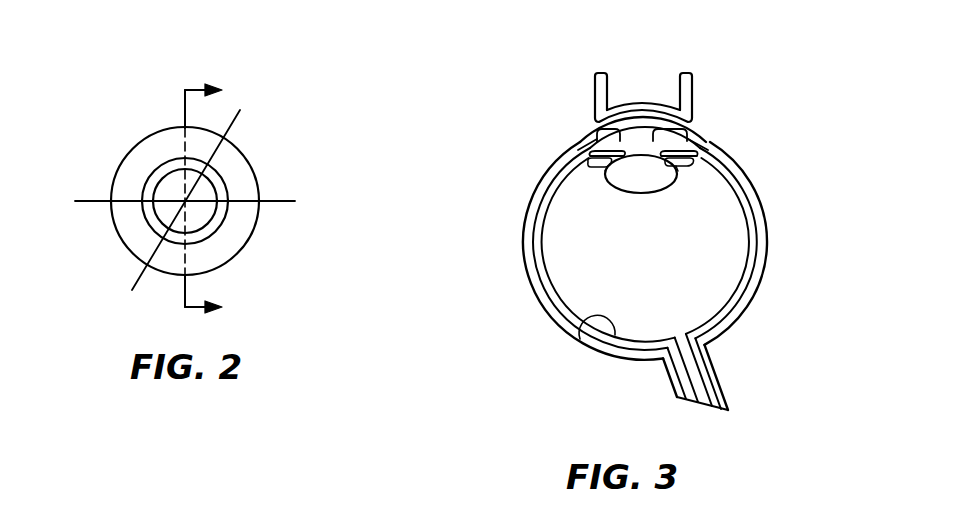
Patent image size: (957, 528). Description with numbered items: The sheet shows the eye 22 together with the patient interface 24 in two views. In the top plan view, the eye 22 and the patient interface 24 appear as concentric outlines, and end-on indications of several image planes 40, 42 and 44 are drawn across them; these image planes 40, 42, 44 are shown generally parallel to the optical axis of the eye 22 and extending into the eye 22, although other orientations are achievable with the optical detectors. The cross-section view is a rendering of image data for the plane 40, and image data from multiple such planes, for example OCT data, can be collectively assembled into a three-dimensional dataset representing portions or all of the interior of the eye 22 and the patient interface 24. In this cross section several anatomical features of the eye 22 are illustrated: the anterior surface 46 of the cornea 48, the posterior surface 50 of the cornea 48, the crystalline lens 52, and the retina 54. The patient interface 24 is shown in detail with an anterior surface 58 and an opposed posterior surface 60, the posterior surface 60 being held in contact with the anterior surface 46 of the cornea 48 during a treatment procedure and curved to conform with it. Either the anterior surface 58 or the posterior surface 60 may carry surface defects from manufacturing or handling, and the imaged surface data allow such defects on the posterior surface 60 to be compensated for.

In FIG. 2, the eye 22 is at (243, 162).
In FIG. 3, the eye 22 is at (560, 265).
In FIG. 2, the patient interface 24 is at (157, 178).
In FIG. 3, the patient interface 24 is at (603, 80).
In FIG. 2, the image plane 40 is at (185, 103).
In FIG. 2, the image plane 42 is at (240, 113).
In FIG. 2, the image plane 44 is at (90, 202).
In FIG. 3, the anterior surface of the cornea 46 is at (690, 138).
In FIG. 3, the cornea 48 is at (633, 118).
In FIG. 3, the posterior surface of the cornea 50 is at (683, 145).
In FIG. 3, the crystalline lens 52 is at (618, 171).
In FIG. 3, the retina 54 is at (580, 348).
In FIG. 3, the anterior surface of the patient interface 58 is at (637, 104).
In FIG. 3, the posterior surface of the patient interface 60 is at (616, 142).